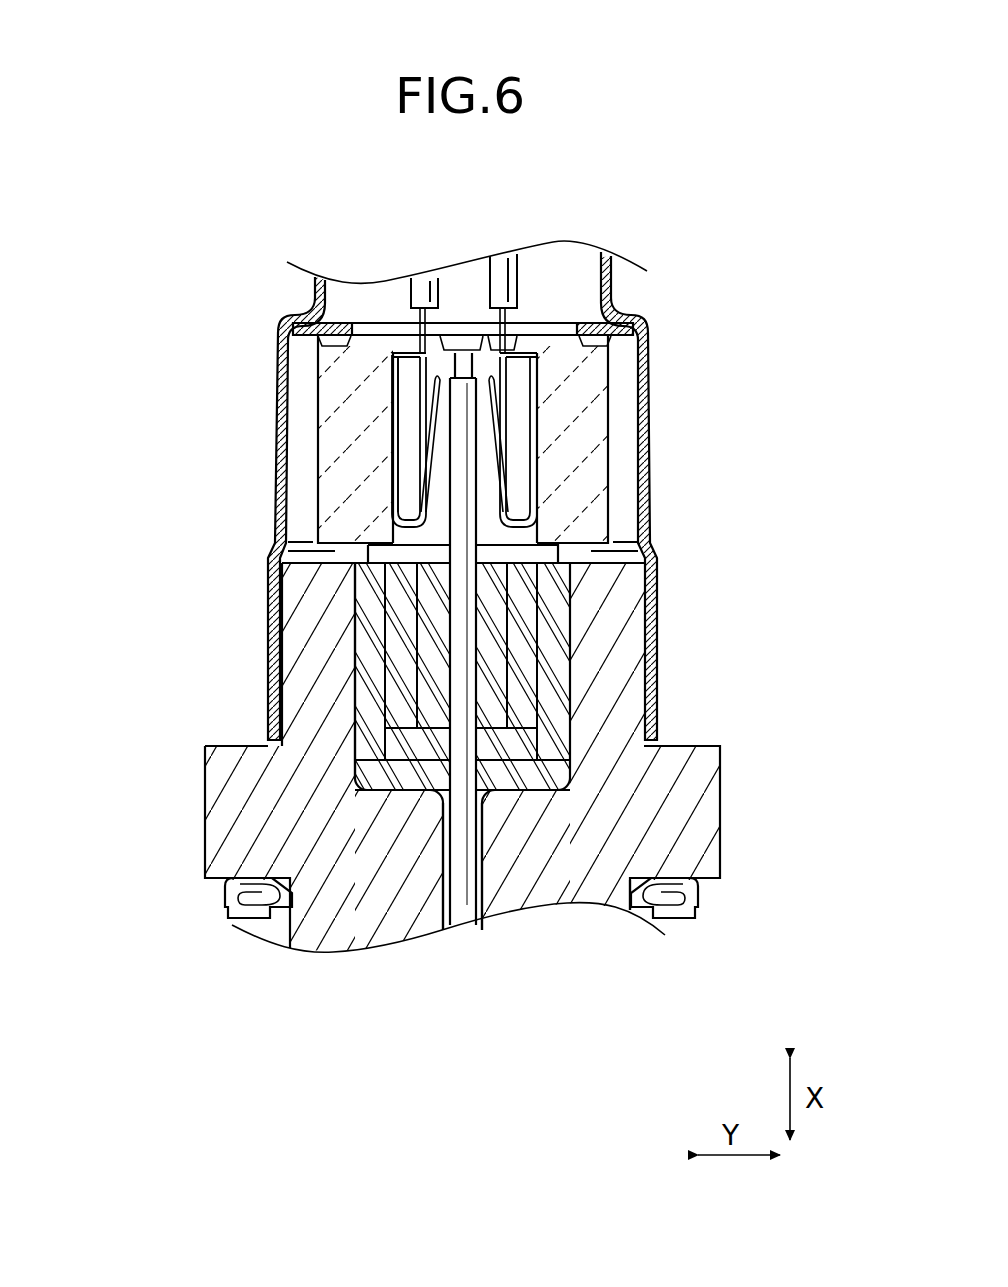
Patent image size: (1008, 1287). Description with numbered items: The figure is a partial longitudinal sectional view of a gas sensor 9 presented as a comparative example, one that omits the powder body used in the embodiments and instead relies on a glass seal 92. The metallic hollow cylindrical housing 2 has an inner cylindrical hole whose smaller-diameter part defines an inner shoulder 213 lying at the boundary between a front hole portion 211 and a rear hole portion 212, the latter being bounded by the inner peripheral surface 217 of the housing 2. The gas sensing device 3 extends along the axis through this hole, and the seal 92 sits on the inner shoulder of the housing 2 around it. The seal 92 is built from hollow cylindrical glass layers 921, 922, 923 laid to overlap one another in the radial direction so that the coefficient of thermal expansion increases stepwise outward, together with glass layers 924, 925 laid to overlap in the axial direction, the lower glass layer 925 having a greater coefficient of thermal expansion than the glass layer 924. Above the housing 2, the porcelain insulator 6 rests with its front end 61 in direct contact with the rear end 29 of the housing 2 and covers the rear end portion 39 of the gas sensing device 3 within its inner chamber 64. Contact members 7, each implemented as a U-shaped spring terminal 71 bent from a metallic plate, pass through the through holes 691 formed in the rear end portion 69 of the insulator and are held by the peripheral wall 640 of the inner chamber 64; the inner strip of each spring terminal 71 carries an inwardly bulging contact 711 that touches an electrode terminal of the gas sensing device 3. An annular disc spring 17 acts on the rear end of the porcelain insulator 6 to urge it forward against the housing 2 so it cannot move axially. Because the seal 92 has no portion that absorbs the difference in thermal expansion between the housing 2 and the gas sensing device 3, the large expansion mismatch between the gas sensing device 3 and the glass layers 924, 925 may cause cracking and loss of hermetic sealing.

The housing 2 is at (685, 862).
The gas sensing device 3 is at (463, 826).
The porcelain insulator 6 is at (357, 480).
The contact members 7 is at (552, 372).
The gas sensor 9 is at (283, 980).
The annular disc spring 17 is at (610, 296).
The rear end of the housing 29 is at (320, 575).
The rear end portion of the gas sensing device 39 is at (463, 414).
The front end of the porcelain insulator 61 is at (365, 555).
The inner chamber 64 is at (483, 487).
The rear end portion of the porcelain insulator 69 is at (279, 332).
The spring terminal 71 is at (387, 383).
The seal 92 is at (416, 753).
The front hole portion 211 is at (447, 897).
The rear hole portion 212 is at (373, 650).
The inner shoulder 213 is at (520, 862).
The inner peripheral surface of the housing 217 is at (345, 735).
The peripheral wall of the inner chamber 640 is at (515, 450).
The through holes 691 is at (417, 345).
The contact 711 is at (400, 394).
The glass layer 921 is at (497, 580).
The glass layer 922 is at (510, 633).
The glass layer 923 is at (560, 683).
The glass layer 924 is at (505, 742).
The glass layer 925 is at (545, 775).